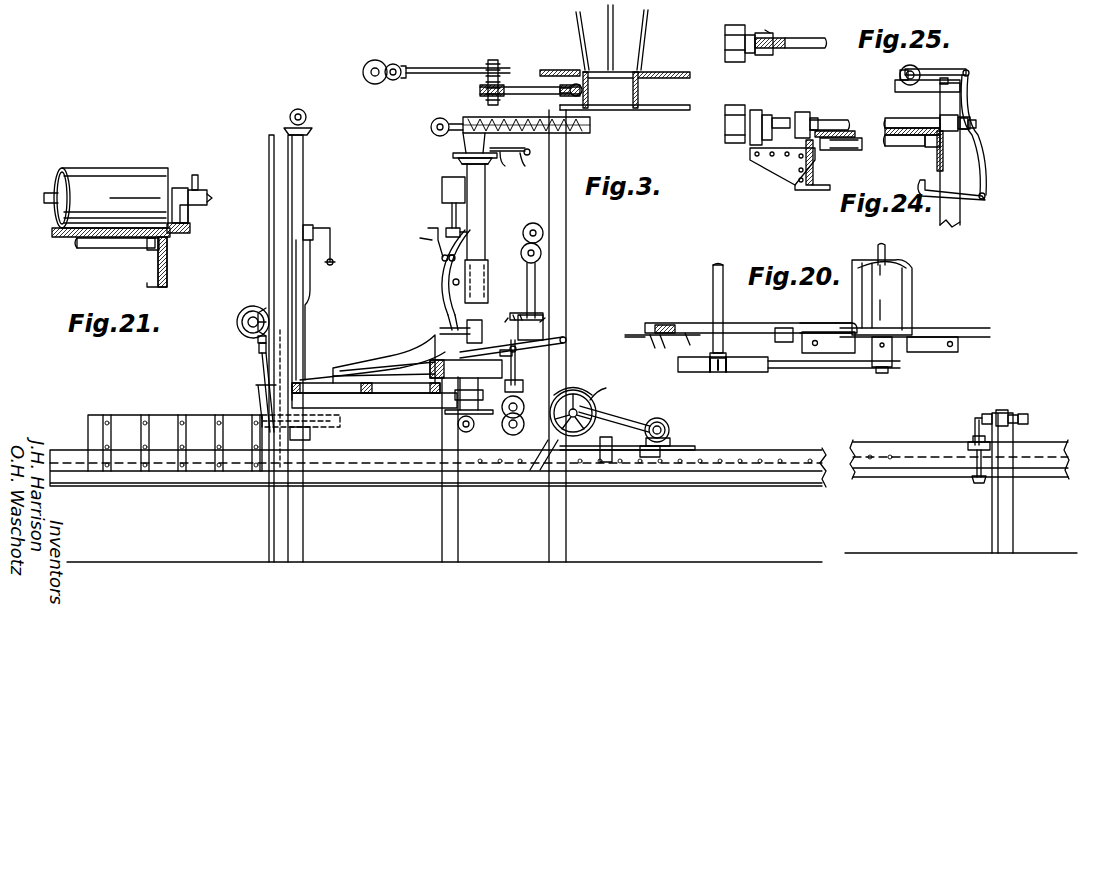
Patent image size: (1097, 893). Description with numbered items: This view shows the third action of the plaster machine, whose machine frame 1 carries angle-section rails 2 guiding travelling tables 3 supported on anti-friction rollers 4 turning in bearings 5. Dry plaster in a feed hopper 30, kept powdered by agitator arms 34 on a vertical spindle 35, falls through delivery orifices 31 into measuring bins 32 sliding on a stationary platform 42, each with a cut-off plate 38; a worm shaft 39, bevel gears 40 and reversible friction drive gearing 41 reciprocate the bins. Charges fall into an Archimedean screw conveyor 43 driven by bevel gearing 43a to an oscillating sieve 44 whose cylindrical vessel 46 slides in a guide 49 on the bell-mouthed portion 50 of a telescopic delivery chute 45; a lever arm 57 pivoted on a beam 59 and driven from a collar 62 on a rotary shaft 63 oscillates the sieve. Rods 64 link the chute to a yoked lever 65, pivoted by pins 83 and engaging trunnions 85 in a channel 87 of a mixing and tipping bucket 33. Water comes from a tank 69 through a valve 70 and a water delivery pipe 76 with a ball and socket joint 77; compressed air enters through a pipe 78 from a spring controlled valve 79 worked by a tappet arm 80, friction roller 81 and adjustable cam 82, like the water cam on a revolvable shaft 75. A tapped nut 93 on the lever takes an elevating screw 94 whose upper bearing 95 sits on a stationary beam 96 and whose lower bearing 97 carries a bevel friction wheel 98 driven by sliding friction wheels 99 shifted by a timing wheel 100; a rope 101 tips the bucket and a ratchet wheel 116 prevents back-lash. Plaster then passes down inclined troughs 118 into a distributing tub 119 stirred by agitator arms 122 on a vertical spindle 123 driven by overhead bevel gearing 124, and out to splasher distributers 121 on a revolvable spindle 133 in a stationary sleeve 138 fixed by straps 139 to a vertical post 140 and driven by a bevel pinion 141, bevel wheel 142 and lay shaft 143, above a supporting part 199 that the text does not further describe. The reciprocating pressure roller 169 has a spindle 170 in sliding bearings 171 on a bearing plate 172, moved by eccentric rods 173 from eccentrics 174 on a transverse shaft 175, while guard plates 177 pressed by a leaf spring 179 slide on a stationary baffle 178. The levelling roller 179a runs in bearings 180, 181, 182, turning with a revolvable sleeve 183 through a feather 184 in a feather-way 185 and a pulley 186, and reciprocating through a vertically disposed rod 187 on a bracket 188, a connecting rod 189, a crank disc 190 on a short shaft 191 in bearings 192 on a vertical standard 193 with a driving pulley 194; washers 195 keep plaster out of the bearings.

In FIG. 21, the machine frame 1 is at (168, 262).
In FIG. 3, the machine frame 1 is at (372, 487).
In FIG. 20, the machine frame 1 is at (940, 328).
In FIG. 25, the machine frame 1 is at (945, 150).
In FIG. 3, the angle-section metal rails 2 is at (845, 447).
In FIG. 20, the angle-section metal rails 2 is at (662, 336).
In FIG. 21, the travelling tables or moulds 3 is at (70, 238).
In FIG. 24, the travelling tables or moulds 3 is at (858, 131).
In FIG. 25, the travelling tables or moulds 3 is at (885, 128).
In FIG. 21, the anti-friction rollers 4 is at (112, 250).
In FIG. 3, the anti-friction rollers 4 is at (380, 450).
In FIG. 24, the anti-friction rollers 4 is at (866, 150).
In FIG. 25, the anti-friction rollers 4 is at (885, 144).
In FIG. 21, the bearings 5 is at (147, 247).
In FIG. 3, the feed hopper 30 is at (642, 30).
In FIG. 3, the delivery orifices 31 is at (640, 70).
In FIG. 3, the measuring bins 32 is at (599, 90).
In FIG. 3, the combined mixing and tipping bucket 33 is at (447, 325).
In FIG. 3, the agitator arms 34 is at (570, 70).
In FIG. 3, the vertical spindle 35 is at (608, 27).
In FIG. 3, the cut-off plate 38 is at (655, 80).
In FIG. 3, the worm shaft 39 is at (528, 85).
In FIG. 3, the bevel gears 40 is at (492, 60).
In FIG. 3, the time-controlled reversible friction drive gearing 41 is at (393, 63).
In FIG. 3, the stationary platform 42 is at (666, 111).
In FIG. 3, the Archimedean screw conveyor 43 is at (478, 117).
In FIG. 3, the bevel gearing 43a is at (446, 118).
In FIG. 3, the oscillating sieve 44 is at (486, 145).
In FIG. 3, the telescopic delivery chute 45 is at (486, 192).
In FIG. 3, the cylindrical vessel 46 is at (453, 150).
In FIG. 3, the guide 49 is at (460, 162).
In FIG. 3, the upper bell-mouthed portion 50 is at (466, 166).
In FIG. 3, the lever arm 57 is at (510, 166).
In FIG. 3, the beam 59 is at (532, 166).
In FIG. 3, the collar 62 is at (568, 148).
In FIG. 3, the rotary shaft 63 is at (527, 148).
In FIG. 3, the rods 64 is at (488, 331).
In FIG. 3, the yoked lever 65 is at (534, 327).
In FIG. 3, the tank 69 is at (442, 192).
In FIG. 3, the valve 70 is at (452, 218).
In FIG. 3, the revolvable shaft 75 is at (328, 266).
In FIG. 3, the water delivery pipe 76 is at (455, 260).
In FIG. 3, the ball and socket joint 77 is at (453, 284).
In FIG. 3, the pipe 78 is at (450, 316).
In FIG. 3, the spring controlled valve 79 is at (460, 232).
In FIG. 3, the tappet arm 80 is at (428, 228).
In FIG. 3, the friction roller 81 is at (441, 258).
In FIG. 3, the adjustable cam 82 is at (420, 240).
In FIG. 3, the pins 83 is at (566, 338).
In FIG. 3, the trunnions 85 is at (428, 348).
In FIG. 3, the channel 87 is at (466, 367).
In FIG. 3, the tapped nut 93 is at (501, 360).
In FIG. 3, the elevating screw 94 is at (516, 355).
In FIG. 3, the bearing 95 is at (512, 312).
In FIG. 3, the stationary beam 96 is at (548, 318).
In FIG. 3, the bearing 97 is at (523, 383).
In FIG. 3, the bevel friction wheel 98 is at (472, 396).
In FIG. 3, the sliding friction wheels 99 is at (503, 418).
In FIG. 3, the timing wheel 100 is at (510, 432).
In FIG. 3, the rope 101 is at (537, 276).
In FIG. 3, the ratchet wheel 116 is at (534, 480).
In FIG. 3, the inclined troughs 118 is at (396, 358).
In FIG. 3, the stationary distributing tub 119 is at (604, 465).
In FIG. 3, the splasher distributers 121 is at (310, 434).
In FIG. 3, the radial agitator arms 122 is at (330, 420).
In FIG. 3, the vertical spindle 123 is at (305, 174).
In FIG. 3, the overhead bevel gearing 124 is at (290, 117).
In FIG. 3, the revolvable spindle 133 is at (259, 350).
In FIG. 3, the stationary sleeve 138 is at (262, 380).
In FIG. 3, the straps 139 is at (298, 330).
In FIG. 3, the vertical posts 140 is at (306, 305).
In FIG. 3, the bevel pinion 141 is at (258, 340).
In FIG. 3, the bevel wheel 142 is at (244, 312).
In FIG. 3, the horizontal lay shaft 143 is at (256, 308).
In FIG. 21, the reciprocating pressure roller 169 is at (122, 168).
In FIG. 3, the reciprocating pressure roller 169 is at (669, 430).
In FIG. 20, the reciprocating pressure roller 169 is at (906, 270).
In FIG. 21, the spindle 170 is at (212, 198).
In FIG. 3, the spindle 170 is at (662, 423).
In FIG. 20, the spindle 170 is at (887, 248).
In FIG. 21, the sliding bearings 171 is at (188, 215).
In FIG. 3, the sliding bearings 171 is at (670, 440).
In FIG. 20, the sliding bearings 171 is at (892, 352).
In FIG. 21, the bearing plate 172 is at (190, 230).
In FIG. 3, the bearing plate 172 is at (652, 460).
In FIG. 20, the bearing plate 172 is at (958, 347).
In FIG. 21, the eccentric rods 173 is at (199, 180).
In FIG. 3, the eccentric rods 173 is at (628, 420).
In FIG. 20, the eccentric rods 173 is at (833, 362).
In FIG. 3, the eccentrics 174 is at (614, 389).
In FIG. 20, the eccentrics 174 is at (755, 374).
In FIG. 3, the transverse shaft 175 is at (585, 395).
In FIG. 20, the transverse shaft 175 is at (713, 278).
In FIG. 21, the guard member 177 is at (180, 188).
In FIG. 3, the guard member 177 is at (636, 453).
In FIG. 20, the guard member 177 is at (820, 323).
In FIG. 20, the stationary baffle 178 is at (690, 323).
In FIG. 20, the leaf spring 179 is at (775, 338).
In FIG. 3, the levelling roller 179a is at (973, 433).
In FIG. 24, the levelling roller 179a is at (803, 38).
In FIG. 25, the levelling roller 179a is at (884, 118).
In FIG. 3, the bearing 180 is at (968, 445).
In FIG. 25, the bearing 180 is at (946, 115).
In FIG. 24, the bearing 181 is at (803, 112).
In FIG. 24, the bearing 182 is at (750, 112).
In FIG. 24, the revolvable sleeve 183 is at (764, 55).
In FIG. 24, the feather 184 is at (745, 50).
In FIG. 24, the feather-way 185 is at (760, 33).
In FIG. 24, the pulley 186 is at (725, 34).
In FIG. 3, the vertically disposed rod 187 is at (974, 470).
In FIG. 25, the vertically disposed rod 187 is at (984, 165).
In FIG. 3, the bracket 188 is at (976, 484).
In FIG. 25, the bracket 188 is at (960, 205).
In FIG. 25, the connecting rod 189 is at (962, 67).
In FIG. 3, the crank disc 190 is at (984, 414).
In FIG. 25, the crank disc 190 is at (918, 68).
In FIG. 3, the short shaft 191 is at (1014, 416).
In FIG. 25, the short shaft 191 is at (900, 70).
In FIG. 3, the bearings 192 is at (1028, 420).
In FIG. 25, the bearings 192 is at (962, 82).
In FIG. 3, the vertical standard 193 is at (1014, 496).
In FIG. 25, the vertical standard 193 is at (962, 102).
In FIG. 3, the driving pulley 194 is at (1003, 410).
In FIG. 24, the washers 195 is at (816, 118).
In FIG. 25, the washers 195 is at (976, 120).
In FIG. 3, the table 199 is at (318, 385).